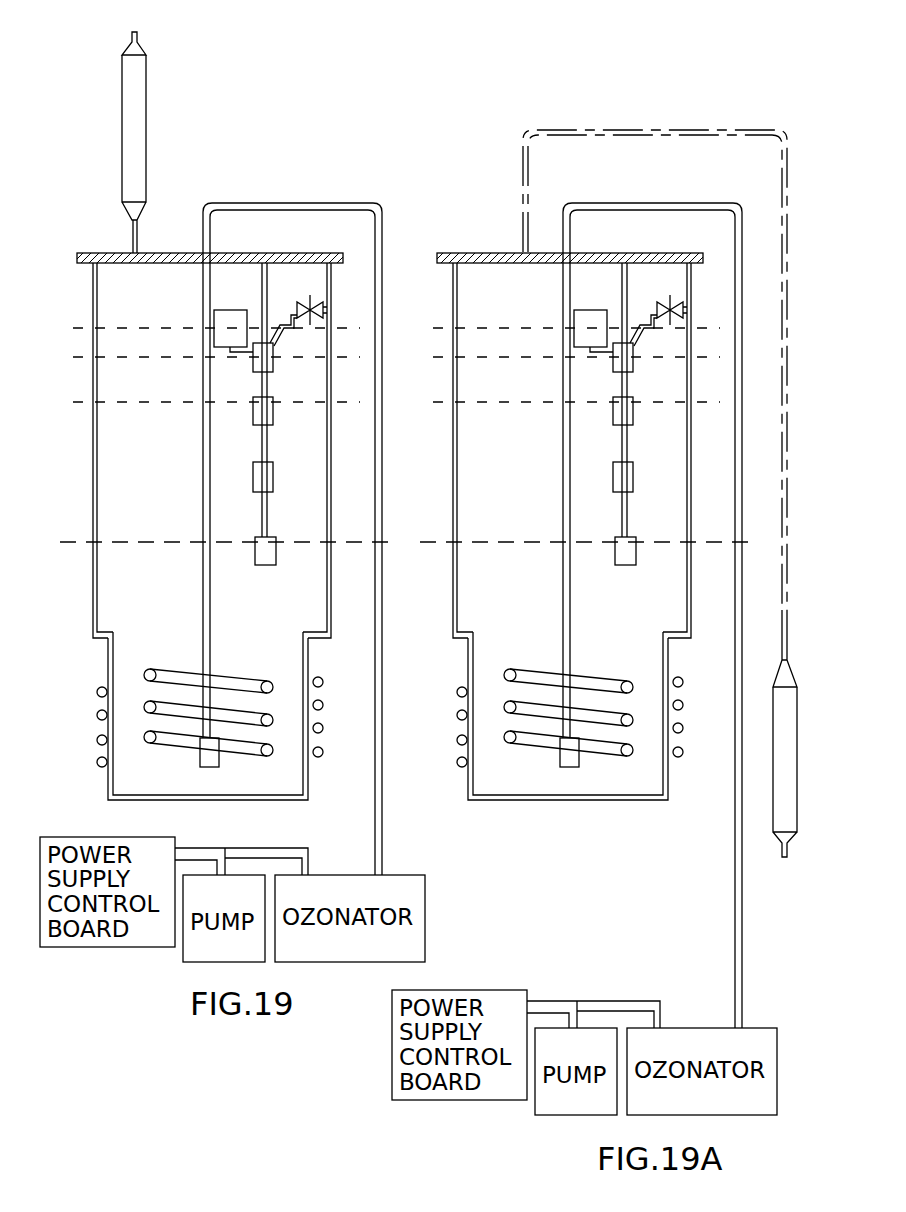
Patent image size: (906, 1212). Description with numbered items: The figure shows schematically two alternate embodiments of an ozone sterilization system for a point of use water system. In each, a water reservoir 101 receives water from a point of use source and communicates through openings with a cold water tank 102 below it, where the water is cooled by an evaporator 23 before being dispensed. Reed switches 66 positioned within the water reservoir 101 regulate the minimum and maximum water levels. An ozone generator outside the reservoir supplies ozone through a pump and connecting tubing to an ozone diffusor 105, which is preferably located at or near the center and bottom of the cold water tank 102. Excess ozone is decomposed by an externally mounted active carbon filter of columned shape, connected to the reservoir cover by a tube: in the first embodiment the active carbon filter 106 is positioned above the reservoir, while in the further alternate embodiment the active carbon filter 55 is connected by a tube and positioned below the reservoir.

In FIG. 19, the water reservoir 101 is at (95, 562).
In FIG. 19A, the water reservoir 101 is at (455, 563).
In FIG. 19, the cold water tank 102 is at (108, 660).
In FIG. 19A, the cold water tank 102 is at (468, 652).
In FIG. 19, the evaporator 23 is at (150, 708).
In FIG. 19A, the evaporator 23 is at (510, 705).
In FIG. 19, the ozone diffusor 105 is at (212, 752).
In FIG. 19A, the ozone diffusor 105 is at (572, 767).
In FIG. 19, the reed switches 66 is at (263, 439).
In FIG. 19A, the reed switches 66 is at (623, 439).
In FIG. 19, the active carbon filter 106 is at (132, 115).
In FIG. 19A, the active carbon filter 55 is at (787, 813).